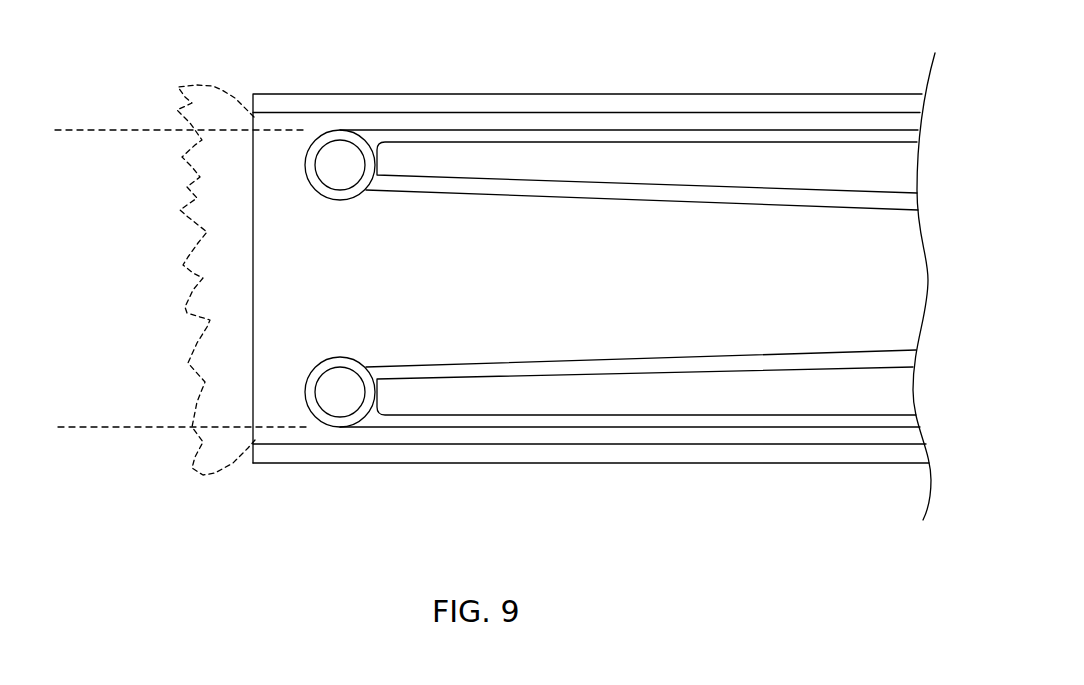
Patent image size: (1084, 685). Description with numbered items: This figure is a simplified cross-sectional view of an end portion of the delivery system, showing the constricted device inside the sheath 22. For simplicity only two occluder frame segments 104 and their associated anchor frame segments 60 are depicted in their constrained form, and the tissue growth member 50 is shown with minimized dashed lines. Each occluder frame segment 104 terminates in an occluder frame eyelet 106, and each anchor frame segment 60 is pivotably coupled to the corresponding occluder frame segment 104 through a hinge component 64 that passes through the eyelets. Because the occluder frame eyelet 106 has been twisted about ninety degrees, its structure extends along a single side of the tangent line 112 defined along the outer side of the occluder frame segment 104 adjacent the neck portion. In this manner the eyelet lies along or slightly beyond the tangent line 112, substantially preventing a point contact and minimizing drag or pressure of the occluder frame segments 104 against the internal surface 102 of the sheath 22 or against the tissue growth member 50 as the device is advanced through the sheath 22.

The sheath 22 is at (597, 463).
The tissue growth member 50 is at (197, 85).
The anchor frame segments 60 is at (511, 192).
The hinge component 64 is at (337, 176).
The internal surface of the sheath 102 is at (343, 116).
The occluder frame segments 104 is at (479, 130).
The occluder frame eyelet 106 is at (345, 353).
The tangent line 112 is at (93, 130).